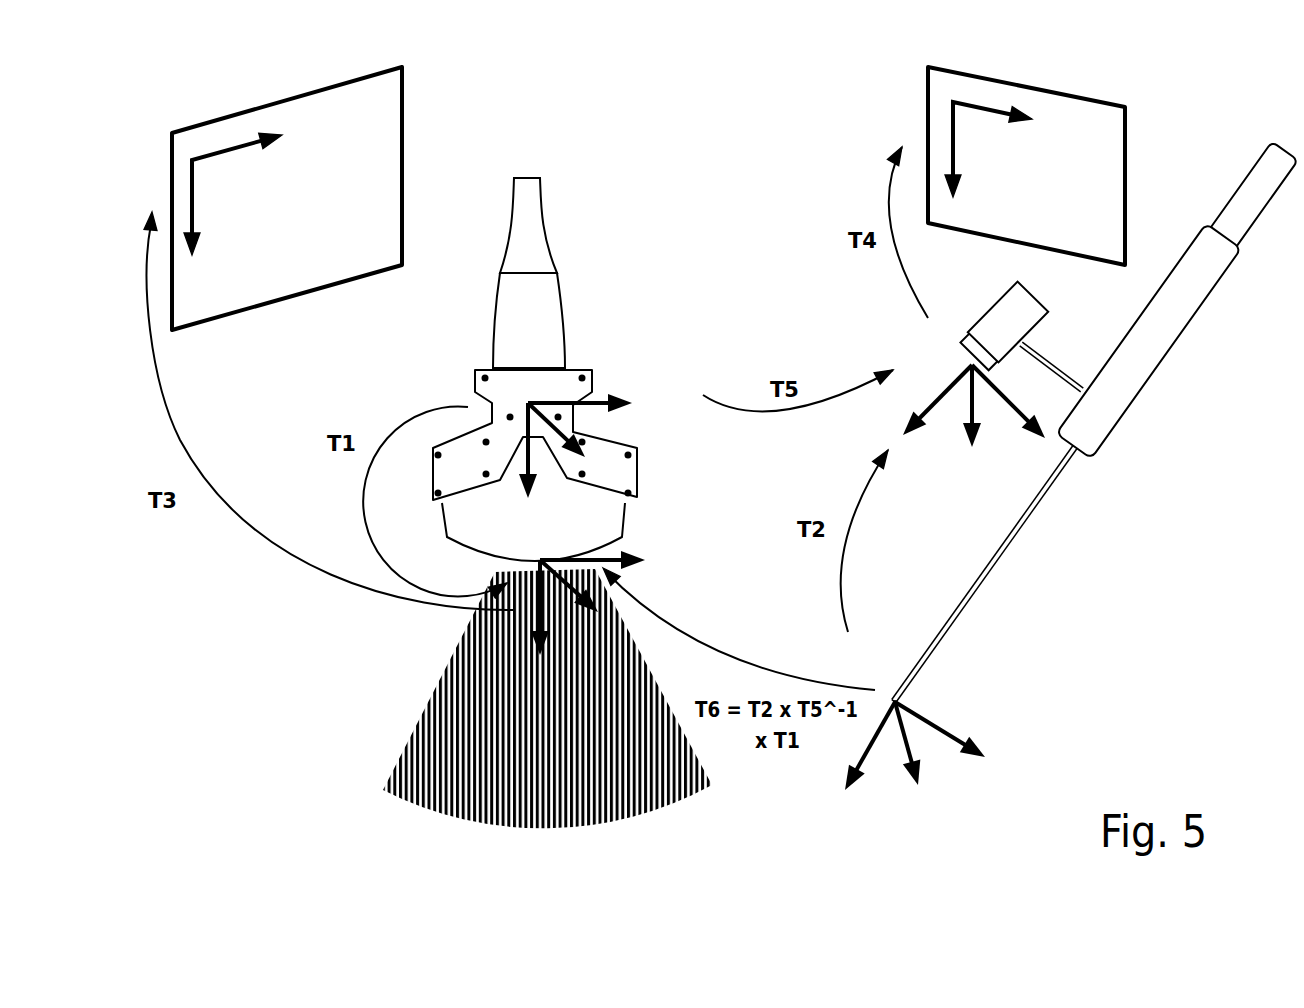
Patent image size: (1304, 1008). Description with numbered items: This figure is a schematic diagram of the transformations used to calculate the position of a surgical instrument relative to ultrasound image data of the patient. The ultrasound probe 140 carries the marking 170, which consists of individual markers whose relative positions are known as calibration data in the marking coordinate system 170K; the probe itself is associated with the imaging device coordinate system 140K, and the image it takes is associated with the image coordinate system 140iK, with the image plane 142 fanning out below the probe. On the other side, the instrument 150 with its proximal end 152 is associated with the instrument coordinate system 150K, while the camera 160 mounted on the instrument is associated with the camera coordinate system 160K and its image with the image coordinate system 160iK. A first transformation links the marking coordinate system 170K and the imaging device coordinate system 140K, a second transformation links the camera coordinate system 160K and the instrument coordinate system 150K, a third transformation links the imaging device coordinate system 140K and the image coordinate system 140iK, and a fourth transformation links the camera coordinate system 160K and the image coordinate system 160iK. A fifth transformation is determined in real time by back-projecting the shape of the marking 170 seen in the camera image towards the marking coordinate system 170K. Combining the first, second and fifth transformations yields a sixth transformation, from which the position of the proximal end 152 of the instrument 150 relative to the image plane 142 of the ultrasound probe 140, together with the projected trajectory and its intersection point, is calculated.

The ultrasound probe 140 is at (533, 369).
The image plane 142 is at (455, 777).
The instrument 150 is at (1088, 425).
The proximal end 152 is at (900, 699).
The camera 160 is at (1021, 337).
The marking 170 is at (535, 435).
The image coordinate system 140iK is at (287, 198).
The image coordinate system 160iK is at (1026, 166).
The imaging device coordinate system 140K is at (611, 603).
The instrument coordinate system 150K is at (915, 753).
The camera coordinate system 160K is at (974, 420).
The marking coordinate system 170K is at (600, 446).